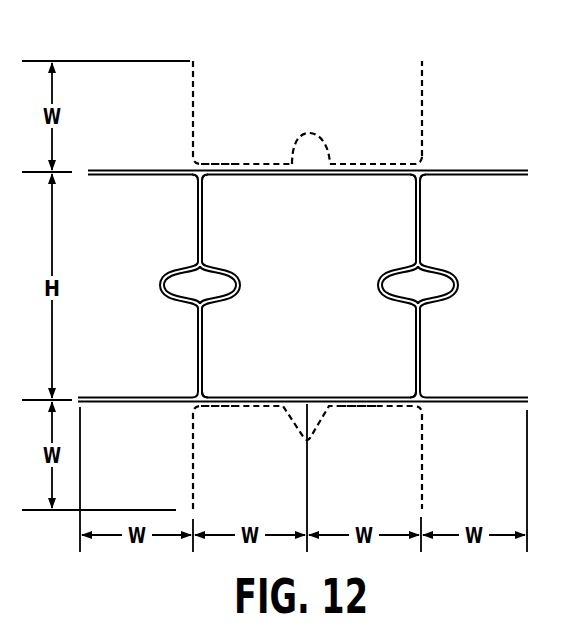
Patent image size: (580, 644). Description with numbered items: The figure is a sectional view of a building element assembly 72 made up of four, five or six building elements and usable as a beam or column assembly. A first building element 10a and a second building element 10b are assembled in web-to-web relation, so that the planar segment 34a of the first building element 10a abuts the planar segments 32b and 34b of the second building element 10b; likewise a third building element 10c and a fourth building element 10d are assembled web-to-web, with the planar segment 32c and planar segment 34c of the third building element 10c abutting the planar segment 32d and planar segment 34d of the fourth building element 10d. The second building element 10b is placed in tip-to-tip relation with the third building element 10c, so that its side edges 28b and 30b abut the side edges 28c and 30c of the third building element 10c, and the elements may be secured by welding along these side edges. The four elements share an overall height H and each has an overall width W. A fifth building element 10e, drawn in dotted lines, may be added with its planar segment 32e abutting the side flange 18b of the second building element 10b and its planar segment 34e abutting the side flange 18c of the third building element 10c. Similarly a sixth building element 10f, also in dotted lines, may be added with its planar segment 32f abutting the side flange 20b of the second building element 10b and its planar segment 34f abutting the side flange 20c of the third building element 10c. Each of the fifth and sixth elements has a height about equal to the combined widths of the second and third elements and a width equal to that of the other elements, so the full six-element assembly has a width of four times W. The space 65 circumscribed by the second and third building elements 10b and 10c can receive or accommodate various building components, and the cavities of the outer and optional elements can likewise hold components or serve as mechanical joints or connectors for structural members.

The first building element 10a is at (120, 165).
The second building element 10b is at (233, 269).
The third building element 10c is at (379, 271).
The fourth building element 10d is at (509, 165).
The fifth building element 10e is at (204, 86).
The sixth building element 10f is at (187, 458).
The side flange 18b is at (225, 183).
The side flange 18c is at (372, 164).
The side flange 20b is at (244, 394).
The side flange 20c is at (373, 394).
The side edge 28b is at (298, 135).
The side edge 28c is at (279, 132).
The side edge 30b is at (306, 398).
The side edge 30c is at (309, 398).
The planar segment 32b is at (207, 209).
The planar segment 32c is at (416, 221).
The planar segment 32d is at (421, 221).
The planar segment 32e is at (248, 163).
The planar segment 32f is at (245, 408).
The planar segment 34a is at (196, 240).
The planar segment 34b is at (213, 313).
The planar segment 34c is at (415, 323).
The planar segment 34d is at (421, 344).
The planar segment 34e is at (358, 163).
The planar segment 34f is at (368, 408).
The space 65 is at (197, 321).
The building element assembly 72 is at (437, 85).